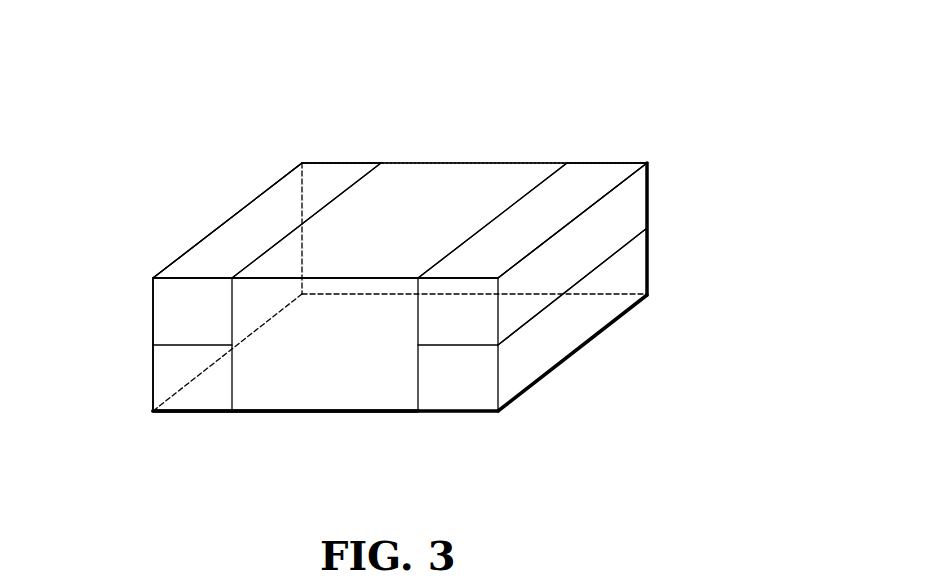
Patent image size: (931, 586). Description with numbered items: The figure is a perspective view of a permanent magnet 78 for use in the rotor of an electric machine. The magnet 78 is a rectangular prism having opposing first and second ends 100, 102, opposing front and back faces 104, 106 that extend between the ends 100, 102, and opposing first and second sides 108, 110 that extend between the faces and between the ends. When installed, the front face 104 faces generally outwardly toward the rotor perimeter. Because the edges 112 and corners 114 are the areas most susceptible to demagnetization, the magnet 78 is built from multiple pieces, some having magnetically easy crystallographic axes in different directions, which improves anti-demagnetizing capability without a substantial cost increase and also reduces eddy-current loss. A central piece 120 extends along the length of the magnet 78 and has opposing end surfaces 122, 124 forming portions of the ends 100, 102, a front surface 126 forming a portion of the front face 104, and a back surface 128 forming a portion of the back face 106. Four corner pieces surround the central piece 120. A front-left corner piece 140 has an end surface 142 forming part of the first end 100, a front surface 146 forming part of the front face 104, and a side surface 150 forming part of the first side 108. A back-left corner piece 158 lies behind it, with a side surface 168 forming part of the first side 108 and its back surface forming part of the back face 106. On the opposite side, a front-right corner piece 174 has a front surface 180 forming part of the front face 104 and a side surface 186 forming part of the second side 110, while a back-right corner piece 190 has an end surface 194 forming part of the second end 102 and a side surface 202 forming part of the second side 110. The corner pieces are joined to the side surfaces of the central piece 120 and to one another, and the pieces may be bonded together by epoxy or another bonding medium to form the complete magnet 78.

The permanent magnet 78 is at (474, 76).
The first end 100 is at (320, 393).
The second end 102 is at (528, 163).
The front face 104 is at (390, 182).
The back face 106 is at (393, 413).
The first side 108 is at (188, 247).
The second side 110 is at (577, 320).
The edges 112 is at (272, 185).
The corners 114 is at (150, 278).
The central piece 120 is at (265, 388).
The end surface 122 is at (360, 393).
The end surface 124 is at (478, 182).
The front surface 126 is at (438, 182).
The back surface 128 is at (280, 415).
The front-left corner piece 140 is at (240, 233).
The end surface 142 is at (190, 313).
The front surface 146 is at (307, 190).
The side surface 150 is at (153, 313).
The back-left corner piece 158 is at (197, 387).
The side surface 168 is at (150, 377).
The front-right corner piece 174 is at (587, 178).
The front surface 180 is at (548, 212).
The side surface 186 is at (648, 296).
The back-right corner piece 190 is at (465, 393).
The end surface 194 is at (648, 250).
The side surface 202 is at (530, 358).